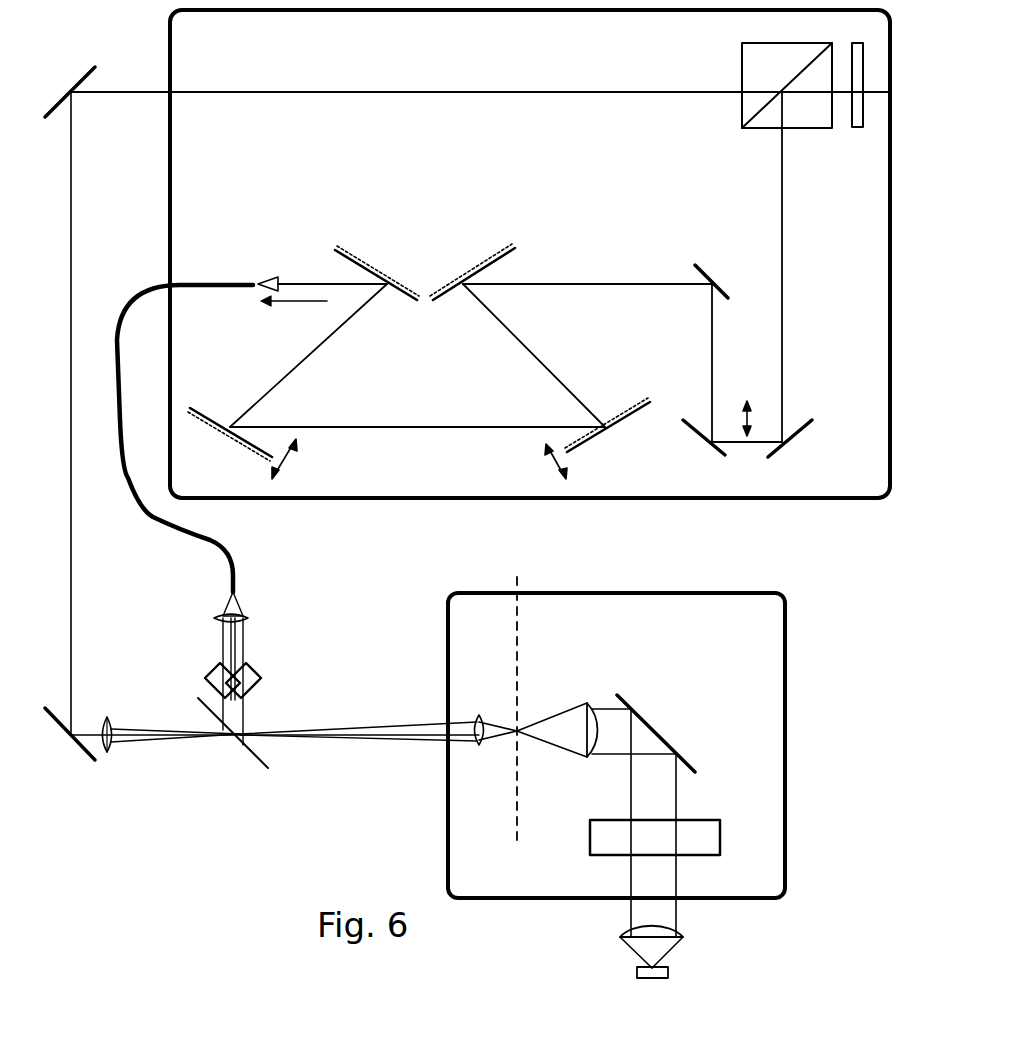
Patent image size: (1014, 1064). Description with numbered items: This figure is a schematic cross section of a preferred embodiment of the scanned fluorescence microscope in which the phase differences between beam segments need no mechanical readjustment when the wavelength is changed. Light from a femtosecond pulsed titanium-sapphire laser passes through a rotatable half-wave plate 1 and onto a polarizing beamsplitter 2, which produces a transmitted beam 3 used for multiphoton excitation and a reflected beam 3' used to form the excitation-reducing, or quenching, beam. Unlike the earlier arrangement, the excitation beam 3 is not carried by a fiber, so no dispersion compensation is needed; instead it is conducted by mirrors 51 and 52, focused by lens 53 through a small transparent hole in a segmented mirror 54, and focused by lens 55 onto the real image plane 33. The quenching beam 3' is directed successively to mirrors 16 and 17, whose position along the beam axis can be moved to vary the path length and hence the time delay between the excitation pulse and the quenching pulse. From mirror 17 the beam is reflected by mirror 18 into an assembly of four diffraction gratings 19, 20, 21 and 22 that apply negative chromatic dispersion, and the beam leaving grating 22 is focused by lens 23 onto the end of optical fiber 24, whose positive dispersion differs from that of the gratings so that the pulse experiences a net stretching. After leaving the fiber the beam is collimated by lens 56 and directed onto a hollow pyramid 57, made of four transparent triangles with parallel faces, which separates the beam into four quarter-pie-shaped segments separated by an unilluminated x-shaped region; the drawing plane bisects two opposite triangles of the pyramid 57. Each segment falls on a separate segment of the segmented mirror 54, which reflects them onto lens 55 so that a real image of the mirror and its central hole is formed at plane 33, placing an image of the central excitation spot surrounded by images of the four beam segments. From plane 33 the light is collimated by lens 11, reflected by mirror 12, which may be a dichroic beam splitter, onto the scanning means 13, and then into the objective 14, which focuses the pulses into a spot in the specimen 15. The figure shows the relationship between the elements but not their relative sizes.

The rotatable half-wave plate 1 is at (858, 130).
The polarizing beamsplitter 2 is at (742, 131).
The beam 3 is at (480, 78).
The beam 3' is at (808, 267).
The lens 11 is at (590, 700).
The mirror 12 is at (700, 770).
The scanning means 13 is at (722, 840).
The objective 14 is at (682, 935).
The specimen 15 is at (670, 975).
The mirror 16 is at (784, 452).
The mirror 17 is at (704, 450).
The mirror 18 is at (710, 275).
The diffraction grating 19 is at (494, 262).
The diffraction grating 20 is at (630, 402).
The diffraction grating 21 is at (210, 413).
The diffraction grating 22 is at (374, 268).
The lens 23 is at (272, 278).
The optical fiber 24 is at (197, 290).
The real image plane 33 is at (520, 690).
The mirror 51 is at (82, 70).
The mirror 52 is at (84, 755).
The lens 53 is at (110, 752).
The segmented mirror 54 is at (262, 768).
The lens 55 is at (480, 755).
The lens 56 is at (250, 612).
The hollow pyramid 57 is at (254, 672).